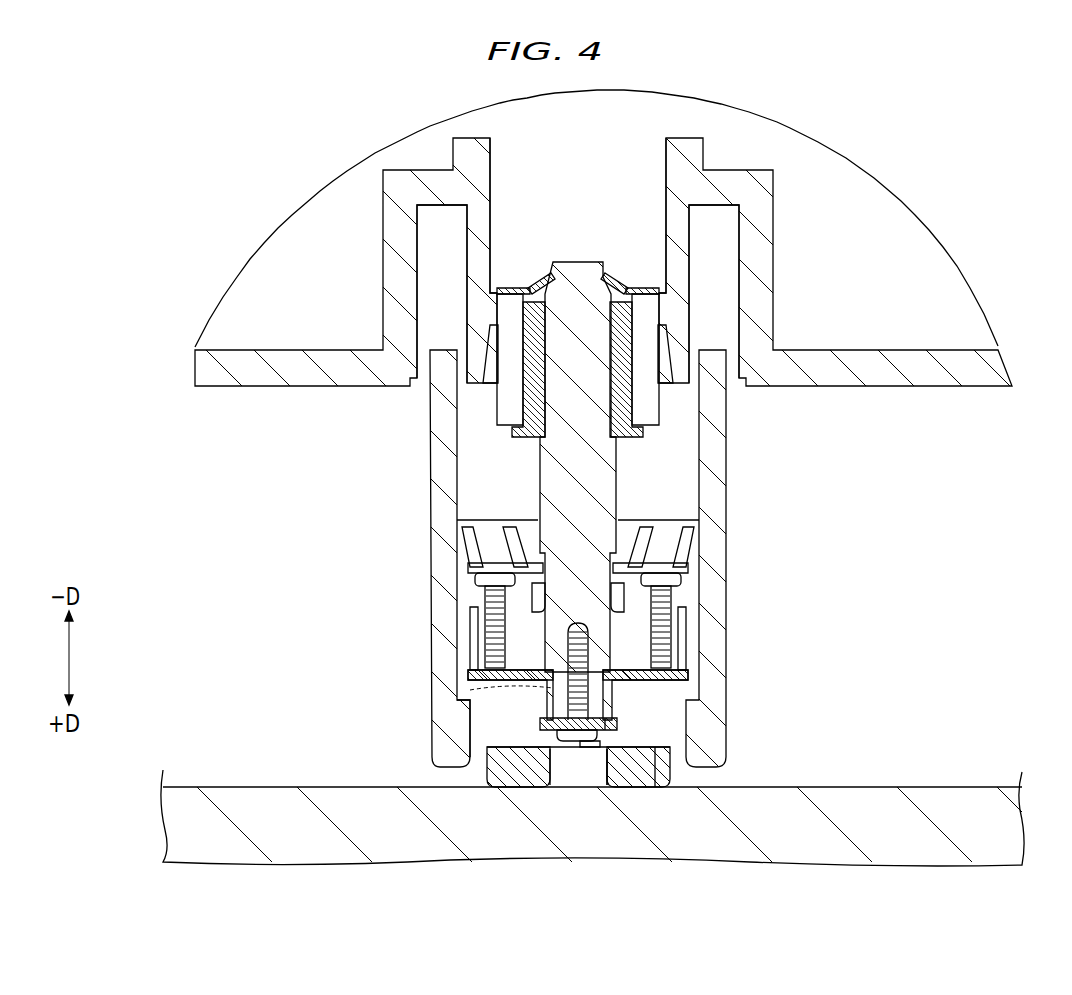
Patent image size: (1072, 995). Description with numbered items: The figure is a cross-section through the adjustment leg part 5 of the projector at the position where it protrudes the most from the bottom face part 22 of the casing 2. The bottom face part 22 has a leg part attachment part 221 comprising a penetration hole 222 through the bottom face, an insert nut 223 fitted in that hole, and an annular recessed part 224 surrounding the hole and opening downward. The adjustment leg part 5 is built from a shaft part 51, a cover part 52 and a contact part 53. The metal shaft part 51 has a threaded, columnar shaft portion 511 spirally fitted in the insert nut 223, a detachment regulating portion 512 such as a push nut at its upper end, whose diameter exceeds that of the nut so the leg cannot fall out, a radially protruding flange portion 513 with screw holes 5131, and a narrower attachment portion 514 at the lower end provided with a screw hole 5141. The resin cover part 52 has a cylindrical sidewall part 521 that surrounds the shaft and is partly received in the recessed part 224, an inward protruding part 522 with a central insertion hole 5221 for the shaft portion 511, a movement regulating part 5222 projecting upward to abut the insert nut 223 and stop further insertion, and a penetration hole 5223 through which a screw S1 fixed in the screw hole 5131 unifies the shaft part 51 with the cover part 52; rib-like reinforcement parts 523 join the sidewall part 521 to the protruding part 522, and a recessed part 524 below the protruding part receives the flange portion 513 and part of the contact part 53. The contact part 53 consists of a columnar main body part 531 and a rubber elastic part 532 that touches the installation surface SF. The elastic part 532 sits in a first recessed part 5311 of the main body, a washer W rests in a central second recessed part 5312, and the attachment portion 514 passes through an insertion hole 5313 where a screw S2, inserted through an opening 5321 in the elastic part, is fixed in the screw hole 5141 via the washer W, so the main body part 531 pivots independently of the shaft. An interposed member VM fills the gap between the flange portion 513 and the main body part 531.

The casing 2 is at (958, 390).
The bottom face part 22 is at (603, 276).
The leg part attachment part 221 is at (795, 150).
The penetration hole 222 is at (622, 278).
The insert nut 223 is at (640, 437).
The recessed part 224 is at (413, 273).
The adjustment leg part 5 is at (945, 553).
The shaft part 51 is at (618, 492).
The shaft portion 511 is at (547, 452).
The detachment regulating portion 512 is at (535, 275).
The cover part 52 is at (740, 556).
The sidewall part 521 is at (430, 447).
The protruding part 522 is at (470, 588).
The insertion hole 5221 is at (482, 640).
The movement regulating part 5222 is at (448, 550).
The penetration hole 5223 is at (468, 612).
The reinforcement part 523 is at (505, 527).
The recessed part 524 is at (467, 757).
The flange portion 513 is at (690, 650).
The screw hole 5131 is at (470, 670).
The attachment portion 514 is at (605, 690).
The screw hole 5141 is at (540, 723).
The contact part 53 is at (690, 762).
The main body part 531 is at (641, 773).
The elastic part 532 is at (677, 773).
The first recessed part 5311 is at (498, 763).
The second recessed part 5312 is at (553, 742).
The insertion hole 5313 is at (588, 742).
The opening 5321 is at (600, 768).
The screw S1 is at (472, 578).
The screw S2 is at (573, 742).
The interposed member VM is at (485, 688).
The washer W is at (617, 724).
The installation surface SF is at (955, 787).